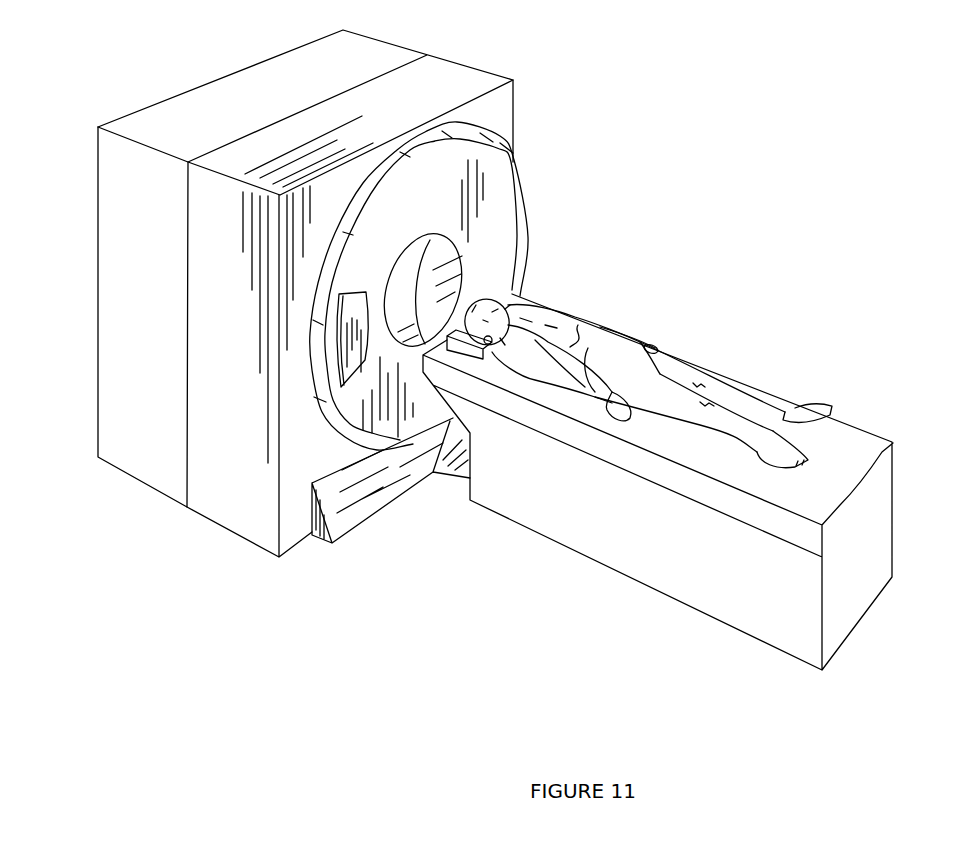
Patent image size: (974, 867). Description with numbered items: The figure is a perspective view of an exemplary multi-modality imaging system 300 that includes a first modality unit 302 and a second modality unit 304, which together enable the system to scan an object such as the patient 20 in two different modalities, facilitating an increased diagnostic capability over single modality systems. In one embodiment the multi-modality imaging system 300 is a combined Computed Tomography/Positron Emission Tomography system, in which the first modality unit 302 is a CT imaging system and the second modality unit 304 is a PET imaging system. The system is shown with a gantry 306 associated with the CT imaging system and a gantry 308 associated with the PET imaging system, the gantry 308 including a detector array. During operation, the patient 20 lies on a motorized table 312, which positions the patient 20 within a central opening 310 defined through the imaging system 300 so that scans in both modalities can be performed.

The multi-modality imaging system 300 is at (827, 97).
The first modality unit 302 is at (223, 512).
The second modality unit 304 is at (138, 470).
The gantry 306 is at (507, 114).
The gantry 308 is at (140, 118).
The central opening 310 is at (407, 263).
The motorized table 312 is at (592, 544).
The patient 20 is at (592, 331).